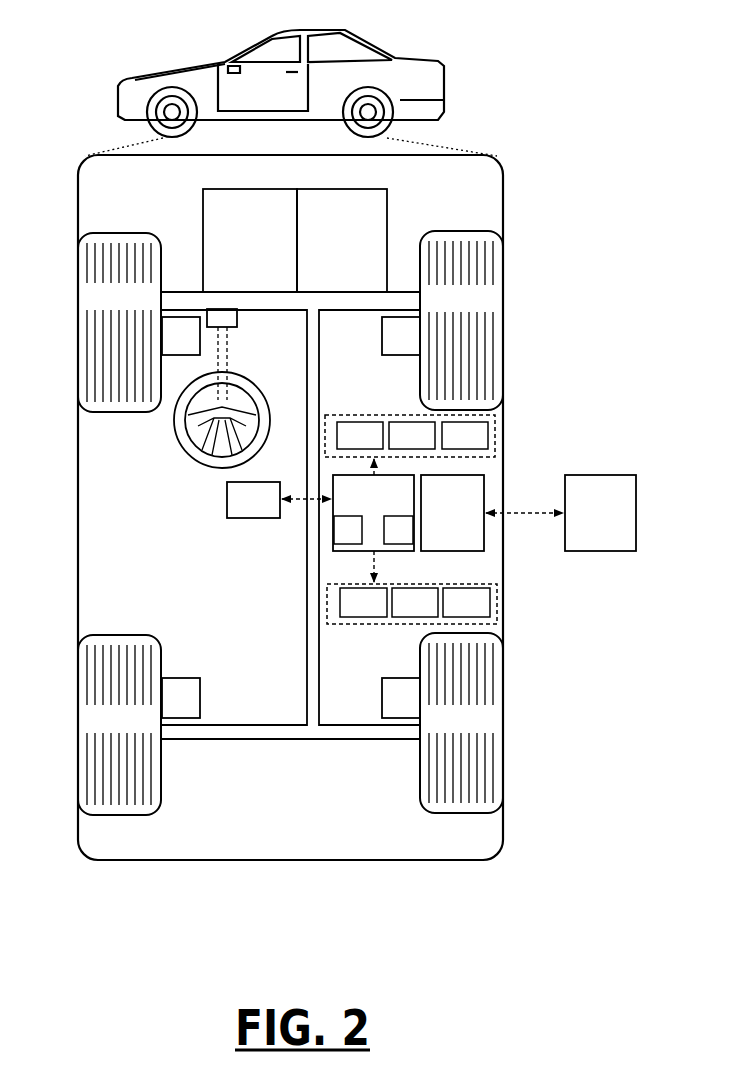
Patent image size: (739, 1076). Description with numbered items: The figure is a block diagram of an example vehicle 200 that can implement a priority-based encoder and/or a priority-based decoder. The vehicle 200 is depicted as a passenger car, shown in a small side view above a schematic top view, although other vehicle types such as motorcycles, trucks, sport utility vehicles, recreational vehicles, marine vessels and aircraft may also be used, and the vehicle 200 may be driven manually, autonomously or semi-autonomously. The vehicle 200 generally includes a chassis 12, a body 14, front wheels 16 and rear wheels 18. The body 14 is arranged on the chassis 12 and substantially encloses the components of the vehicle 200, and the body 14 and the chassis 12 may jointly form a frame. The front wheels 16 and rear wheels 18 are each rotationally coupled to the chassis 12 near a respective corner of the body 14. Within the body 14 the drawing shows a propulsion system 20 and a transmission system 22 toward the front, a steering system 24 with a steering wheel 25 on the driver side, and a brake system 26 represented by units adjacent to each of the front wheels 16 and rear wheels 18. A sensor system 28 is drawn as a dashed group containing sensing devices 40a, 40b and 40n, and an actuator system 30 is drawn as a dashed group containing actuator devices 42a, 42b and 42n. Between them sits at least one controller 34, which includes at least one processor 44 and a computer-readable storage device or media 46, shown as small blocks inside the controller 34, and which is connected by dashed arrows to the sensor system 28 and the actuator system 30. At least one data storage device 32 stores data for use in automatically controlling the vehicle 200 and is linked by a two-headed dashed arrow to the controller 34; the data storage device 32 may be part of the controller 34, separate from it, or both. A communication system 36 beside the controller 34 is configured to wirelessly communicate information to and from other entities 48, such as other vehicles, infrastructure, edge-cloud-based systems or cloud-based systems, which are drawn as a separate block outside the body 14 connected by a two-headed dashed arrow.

The vehicle 200 is at (133, 70).
The chassis 12 is at (315, 741).
The body 14 is at (78, 476).
The front wheels 16 is at (109, 307).
The rear wheels 18 is at (109, 729).
The propulsion system 20 is at (239, 249).
The transmission system 22 is at (332, 249).
The steering system 24 is at (203, 401).
The steering wheel 25 is at (267, 383).
The brake system 26 is at (172, 345).
The sensor system 28 is at (410, 414).
The actuator system 30 is at (412, 624).
The data storage device 32 is at (244, 508).
The controller 34 is at (373, 513).
The communication system 36 is at (443, 521).
The sensing device 40a is at (348, 444).
The sensing device 40b is at (400, 444).
The sensing device 40n is at (453, 444).
The actuator device 42a is at (351, 611).
The actuator device 42b is at (403, 611).
The actuator device 42n is at (454, 611).
The processor 44 is at (340, 538).
The computer-readable storage device or media 46 is at (390, 538).
The other entities 48 is at (590, 521).